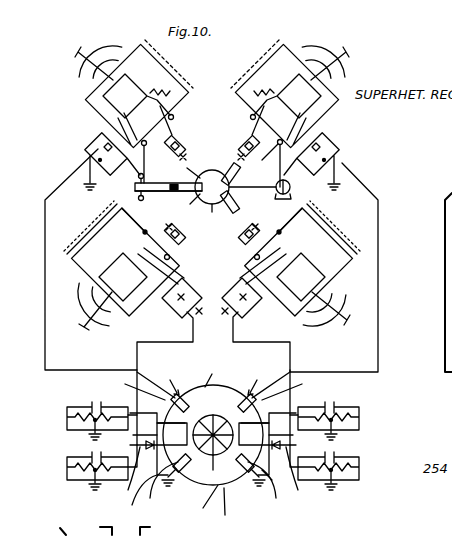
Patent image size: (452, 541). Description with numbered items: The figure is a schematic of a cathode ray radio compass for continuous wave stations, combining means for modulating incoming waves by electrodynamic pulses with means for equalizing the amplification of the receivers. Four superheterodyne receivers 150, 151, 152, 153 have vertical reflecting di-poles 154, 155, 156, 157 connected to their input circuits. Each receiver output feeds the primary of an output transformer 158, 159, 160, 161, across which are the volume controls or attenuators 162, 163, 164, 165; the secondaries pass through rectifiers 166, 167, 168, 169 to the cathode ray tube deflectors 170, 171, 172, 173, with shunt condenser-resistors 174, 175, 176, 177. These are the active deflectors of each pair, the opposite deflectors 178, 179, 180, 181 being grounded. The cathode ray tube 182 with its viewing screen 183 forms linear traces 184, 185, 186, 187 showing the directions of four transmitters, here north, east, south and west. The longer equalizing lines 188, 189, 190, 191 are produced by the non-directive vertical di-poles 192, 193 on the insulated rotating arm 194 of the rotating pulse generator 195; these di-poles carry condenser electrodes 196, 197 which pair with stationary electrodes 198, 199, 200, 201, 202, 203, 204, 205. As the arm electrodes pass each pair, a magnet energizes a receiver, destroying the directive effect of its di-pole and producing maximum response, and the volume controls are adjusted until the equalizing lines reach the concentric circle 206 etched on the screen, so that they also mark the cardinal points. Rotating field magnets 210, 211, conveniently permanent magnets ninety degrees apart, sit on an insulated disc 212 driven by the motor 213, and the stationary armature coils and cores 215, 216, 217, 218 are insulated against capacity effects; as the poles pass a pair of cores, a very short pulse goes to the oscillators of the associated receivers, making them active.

The superheterodyne receiver 150 is at (136, 95).
The superheterodyne receiver 151 is at (286, 95).
The superheterodyne receiver 152 is at (296, 262).
The superheterodyne receiver 153 is at (128, 262).
The vertical reflecting di-pole 154 is at (100, 50).
The vertical reflecting di-pole 155 is at (338, 60).
The vertical reflecting di-pole 156 is at (334, 320).
The vertical reflecting di-pole 157 is at (90, 320).
The output transformer 158 is at (106, 159).
The output transformer 159 is at (324, 159).
The output transformer 160 is at (252, 304).
The output transformer 161 is at (177, 307).
The volume control 162 is at (167, 68).
The volume control 163 is at (257, 68).
The volume control 164 is at (322, 222).
The volume control 165 is at (100, 222).
The rectifier 166 is at (166, 377).
The rectifier 167 is at (265, 375).
The rectifier 168 is at (301, 471).
The rectifier 169 is at (127, 471).
The cathode ray tube deflector 170 is at (168, 391).
The cathode ray tube deflector 171 is at (261, 392).
The cathode ray tube deflector 172 is at (240, 474).
The cathode ray tube deflector 173 is at (190, 472).
The shunt condenser-resistor 174 is at (78, 406).
The shunt condenser-resistor 175 is at (337, 407).
The shunt condenser-resistor 176 is at (343, 480).
The shunt condenser-resistor 177 is at (88, 472).
The grounded deflector 178 is at (133, 388).
The grounded deflector 179 is at (290, 389).
The grounded deflector 180 is at (271, 486).
The grounded deflector 181 is at (158, 488).
The cathode ray tube 182 is at (227, 509).
The viewing screen 183 is at (203, 504).
The linear trace 184 is at (212, 417).
The linear trace 185 is at (267, 429).
The linear trace 186 is at (222, 470).
The linear trace 187 is at (159, 429).
The equalizing line 188 is at (140, 445).
The equalizing line 189 is at (286, 445).
The equalizing line 190 is at (274, 478).
The equalizing line 191 is at (137, 498).
The non-directive vertical di-pole 192 is at (138, 177).
The non-directive vertical di-pole 193 is at (138, 198).
The rotating arm 194 is at (192, 188).
The rotating pulse generator 195 is at (215, 214).
The condenser electrode 196 is at (140, 179).
The condenser electrode 197 is at (144, 196).
The condenser electrode 198 is at (149, 162).
The condenser electrode 199 is at (174, 117).
The condenser electrode 200 is at (250, 117).
The condenser electrode 201 is at (276, 164).
The condenser electrode 202 is at (283, 221).
The condenser electrode 203 is at (255, 259).
The condenser electrode 204 is at (170, 257).
The condenser electrode 205 is at (143, 221).
The concentric circle 206 is at (214, 373).
The rotating field magnet 210 is at (242, 174).
The rotating field magnet 211 is at (243, 202).
The insulated disc 212 is at (235, 180).
The motor 213 is at (291, 188).
The armature coil and core 215 is at (185, 144).
The armature coil and core 216 is at (243, 144).
The armature coil and core 217 is at (246, 239).
The armature coil and core 218 is at (186, 233).